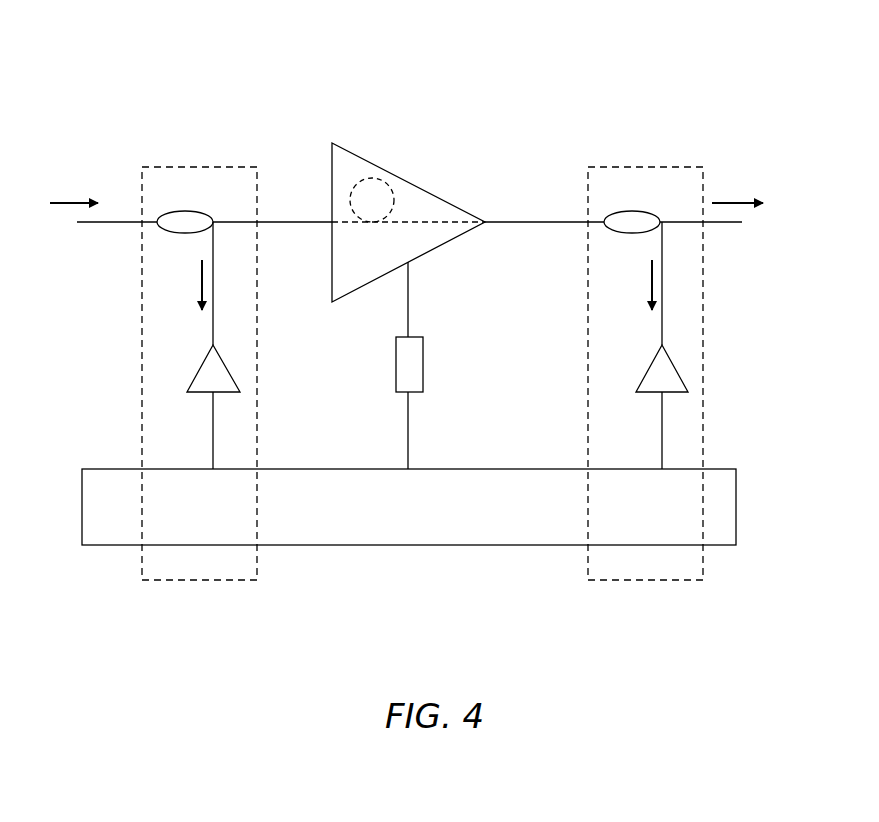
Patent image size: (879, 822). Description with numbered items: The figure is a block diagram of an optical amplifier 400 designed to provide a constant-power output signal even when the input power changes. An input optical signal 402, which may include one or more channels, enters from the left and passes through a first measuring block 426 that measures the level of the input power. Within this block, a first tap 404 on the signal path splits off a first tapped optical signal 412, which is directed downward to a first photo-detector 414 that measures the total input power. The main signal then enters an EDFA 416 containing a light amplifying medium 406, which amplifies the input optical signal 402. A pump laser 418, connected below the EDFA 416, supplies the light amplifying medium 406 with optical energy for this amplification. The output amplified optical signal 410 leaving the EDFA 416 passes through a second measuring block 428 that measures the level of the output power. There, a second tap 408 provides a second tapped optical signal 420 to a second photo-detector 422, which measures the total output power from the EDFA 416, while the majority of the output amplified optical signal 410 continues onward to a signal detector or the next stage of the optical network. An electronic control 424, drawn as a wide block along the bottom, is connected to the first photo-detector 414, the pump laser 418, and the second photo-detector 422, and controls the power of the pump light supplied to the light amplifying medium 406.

The optical amplifier 400 is at (182, 55).
The input optical signal 402 is at (78, 188).
The first tap 404 is at (182, 211).
The light amplifying medium 406 is at (380, 172).
The second tap 408 is at (632, 211).
The output amplified optical signal 410 is at (742, 188).
The first tapped optical signal 412 is at (186, 283).
The first photo-detector 414 is at (238, 390).
The EDFA 416 is at (428, 258).
The pump laser 418 is at (423, 375).
The second tapped optical signal 420 is at (637, 283).
The second photo-detector 422 is at (686, 388).
The electronic control 424 is at (409, 507).
The first measuring block 426 is at (134, 352).
The second measuring block 428 is at (582, 340).